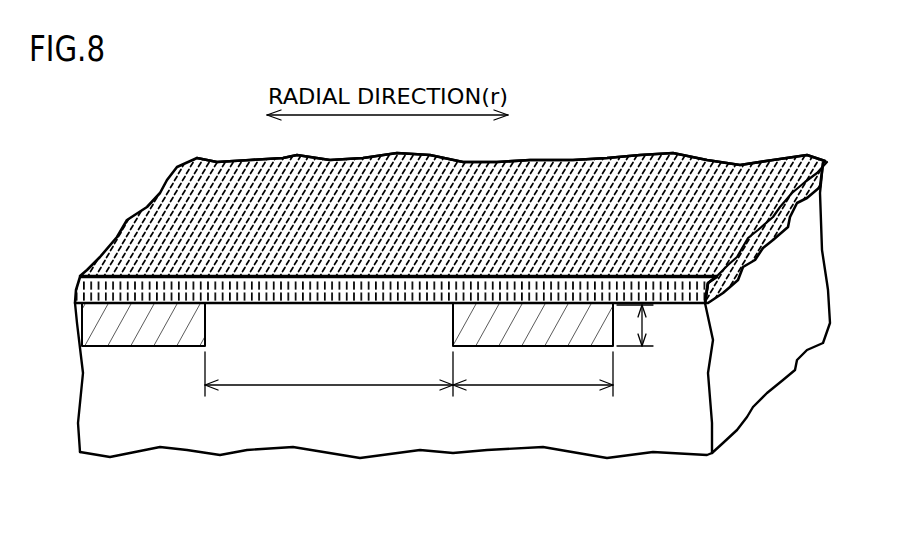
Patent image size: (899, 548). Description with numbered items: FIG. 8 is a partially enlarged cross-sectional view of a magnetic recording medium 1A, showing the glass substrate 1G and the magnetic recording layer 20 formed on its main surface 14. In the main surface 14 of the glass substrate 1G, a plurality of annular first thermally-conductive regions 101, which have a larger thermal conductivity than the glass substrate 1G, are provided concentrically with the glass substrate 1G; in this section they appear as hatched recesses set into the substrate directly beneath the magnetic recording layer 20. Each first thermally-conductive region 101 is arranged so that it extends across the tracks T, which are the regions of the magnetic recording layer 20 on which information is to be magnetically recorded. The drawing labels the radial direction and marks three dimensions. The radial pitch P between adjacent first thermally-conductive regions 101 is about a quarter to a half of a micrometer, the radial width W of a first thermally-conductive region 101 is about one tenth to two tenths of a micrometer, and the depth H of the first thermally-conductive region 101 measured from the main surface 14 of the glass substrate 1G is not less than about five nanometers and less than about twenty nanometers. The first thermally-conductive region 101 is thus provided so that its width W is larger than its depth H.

The magnetic recording medium 1A is at (690, 137).
The track T is at (558, 158).
The magnetic recording layer 20 is at (79, 290).
The main surface 14 is at (687, 305).
The glass substrate 1G is at (330, 423).
The first thermally-conductive region 101 is at (140, 346).
The pitch P is at (329, 374).
The width W is at (533, 374).
The depth H is at (643, 325).